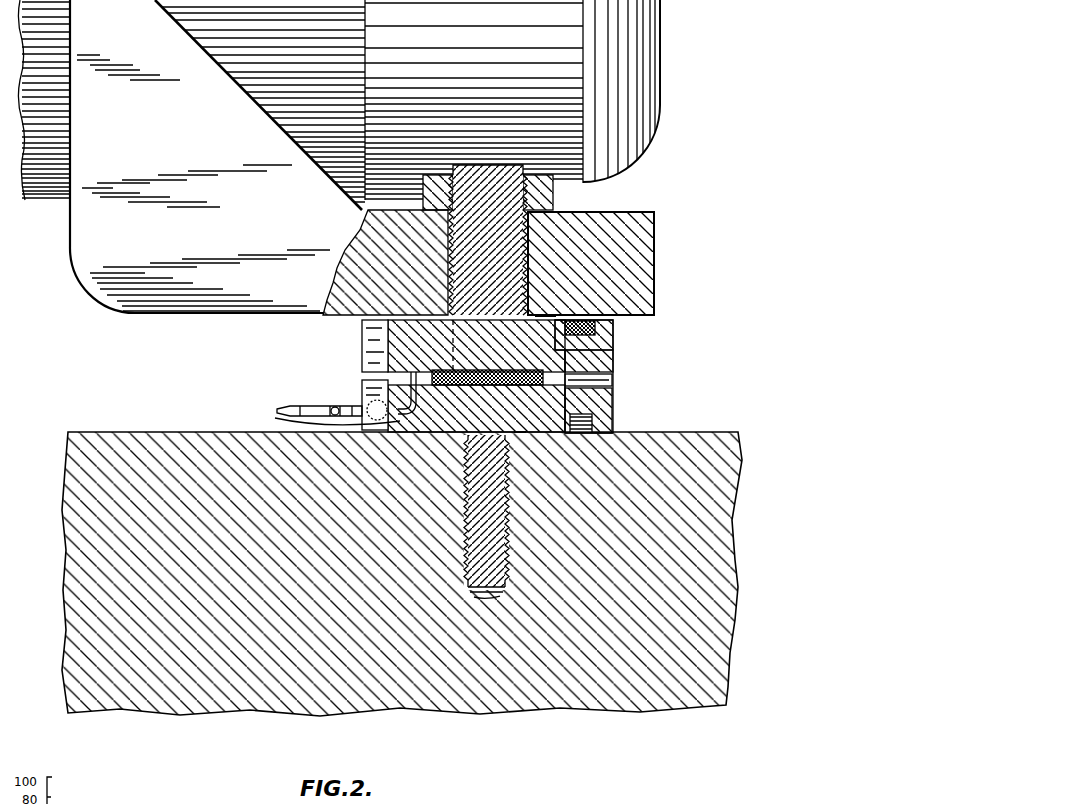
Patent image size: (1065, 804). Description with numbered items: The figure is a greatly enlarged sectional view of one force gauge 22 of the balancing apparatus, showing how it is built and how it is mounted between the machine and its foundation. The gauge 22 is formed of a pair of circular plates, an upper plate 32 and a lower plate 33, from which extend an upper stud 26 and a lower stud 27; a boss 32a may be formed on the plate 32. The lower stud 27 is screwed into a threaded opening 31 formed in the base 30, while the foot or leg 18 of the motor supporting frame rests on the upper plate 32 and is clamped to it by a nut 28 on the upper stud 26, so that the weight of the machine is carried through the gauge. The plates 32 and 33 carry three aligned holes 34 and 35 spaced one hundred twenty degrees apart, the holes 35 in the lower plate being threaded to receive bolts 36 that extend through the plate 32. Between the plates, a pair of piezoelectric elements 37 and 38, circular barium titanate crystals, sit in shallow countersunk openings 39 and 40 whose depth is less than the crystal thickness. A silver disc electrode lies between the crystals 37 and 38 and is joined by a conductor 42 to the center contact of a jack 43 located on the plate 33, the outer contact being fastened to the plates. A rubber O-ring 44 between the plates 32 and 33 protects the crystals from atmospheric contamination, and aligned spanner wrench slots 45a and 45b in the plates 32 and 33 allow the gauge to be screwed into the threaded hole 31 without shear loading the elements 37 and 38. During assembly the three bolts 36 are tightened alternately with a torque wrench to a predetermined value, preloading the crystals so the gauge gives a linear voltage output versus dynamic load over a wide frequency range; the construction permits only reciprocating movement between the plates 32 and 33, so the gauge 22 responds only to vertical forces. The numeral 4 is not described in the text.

The housing foot 4 is at (447, 318).
The leg 18 is at (650, 238).
The force gauge 22 is at (620, 353).
The upper stud 26 is at (458, 205).
The lower stud 27 is at (505, 520).
The nut 28 is at (553, 199).
The base 30 is at (133, 432).
The threaded opening 31 is at (484, 590).
The upper plate 32 is at (613, 361).
The boss 32a is at (545, 317).
The lower plate 33 is at (613, 410).
The aligned hole 34 is at (613, 338).
The threaded hole 35 is at (592, 423).
The bolt 36 is at (612, 390).
The piezoelectric element 37 is at (518, 372).
The piezoelectric element 38 is at (462, 437).
The countersunk opening 39 is at (523, 372).
The countersunk opening 40 is at (520, 433).
The conductor 42 is at (398, 360).
The jack 43 is at (280, 413).
The rubber O-ring 44 is at (398, 376).
The spanner wrench slot 45a is at (362, 332).
The spanner wrench slot 45b is at (362, 388).